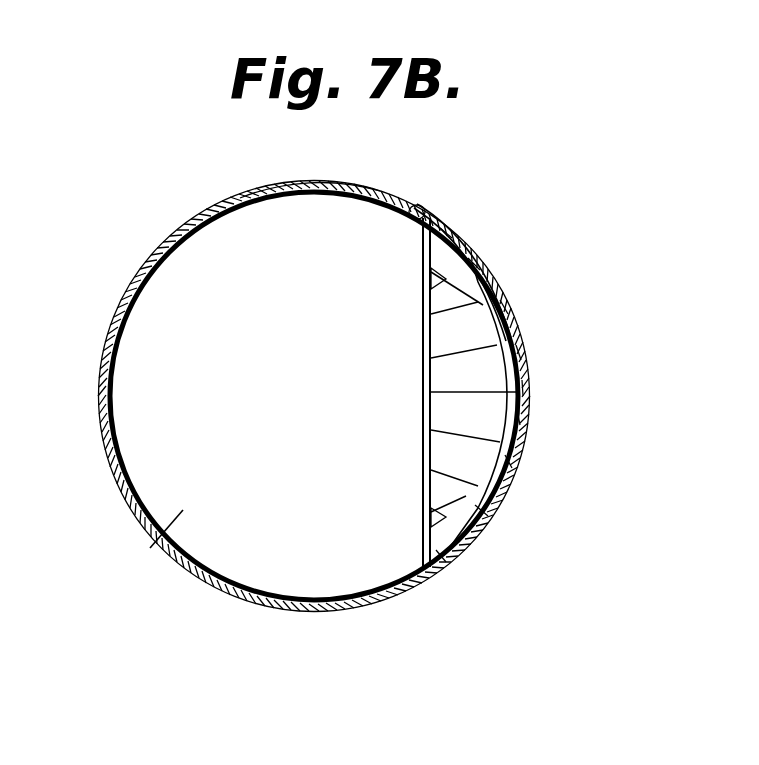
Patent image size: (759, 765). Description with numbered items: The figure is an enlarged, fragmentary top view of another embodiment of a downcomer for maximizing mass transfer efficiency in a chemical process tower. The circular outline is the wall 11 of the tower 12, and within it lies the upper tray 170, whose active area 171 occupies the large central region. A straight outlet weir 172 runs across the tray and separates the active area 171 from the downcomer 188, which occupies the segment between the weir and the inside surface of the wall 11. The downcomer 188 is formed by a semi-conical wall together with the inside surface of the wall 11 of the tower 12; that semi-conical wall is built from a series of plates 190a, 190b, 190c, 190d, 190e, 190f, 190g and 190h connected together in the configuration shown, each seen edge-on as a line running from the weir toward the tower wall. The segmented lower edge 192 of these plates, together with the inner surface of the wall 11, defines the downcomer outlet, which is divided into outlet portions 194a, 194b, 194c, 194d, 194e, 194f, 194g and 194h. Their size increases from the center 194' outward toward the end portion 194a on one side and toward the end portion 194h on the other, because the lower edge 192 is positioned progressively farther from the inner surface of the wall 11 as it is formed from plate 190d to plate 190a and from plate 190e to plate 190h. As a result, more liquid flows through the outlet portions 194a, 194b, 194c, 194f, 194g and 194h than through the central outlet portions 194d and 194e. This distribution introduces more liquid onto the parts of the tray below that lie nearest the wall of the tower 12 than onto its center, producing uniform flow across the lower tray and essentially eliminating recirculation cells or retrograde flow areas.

The wall 11 is at (130, 287).
The tower 12 is at (238, 196).
The upper tray 170 is at (141, 541).
The active area 171 is at (249, 395).
The outlet weir 172 is at (420, 205).
The downcomer 188 is at (490, 280).
The plate 190a is at (438, 273).
The plate 190b is at (438, 303).
The plate 190c is at (438, 339).
The plate 190d is at (438, 375).
The plate 190e is at (438, 412).
The plate 190f is at (438, 452).
The plate 190g is at (438, 485).
The plate 190h is at (438, 522).
The segmented lower edge 192 is at (512, 336).
The outlet portion 194a is at (445, 232).
The outlet portion 194b is at (472, 263).
The outlet portion 194c is at (505, 310).
The outlet portion 194d is at (522, 352).
The center 194' is at (559, 385).
The outlet portion 194e is at (520, 412).
The outlet portion 194f is at (512, 458).
The outlet portion 194g is at (480, 512).
The outlet portion 194h is at (438, 558).